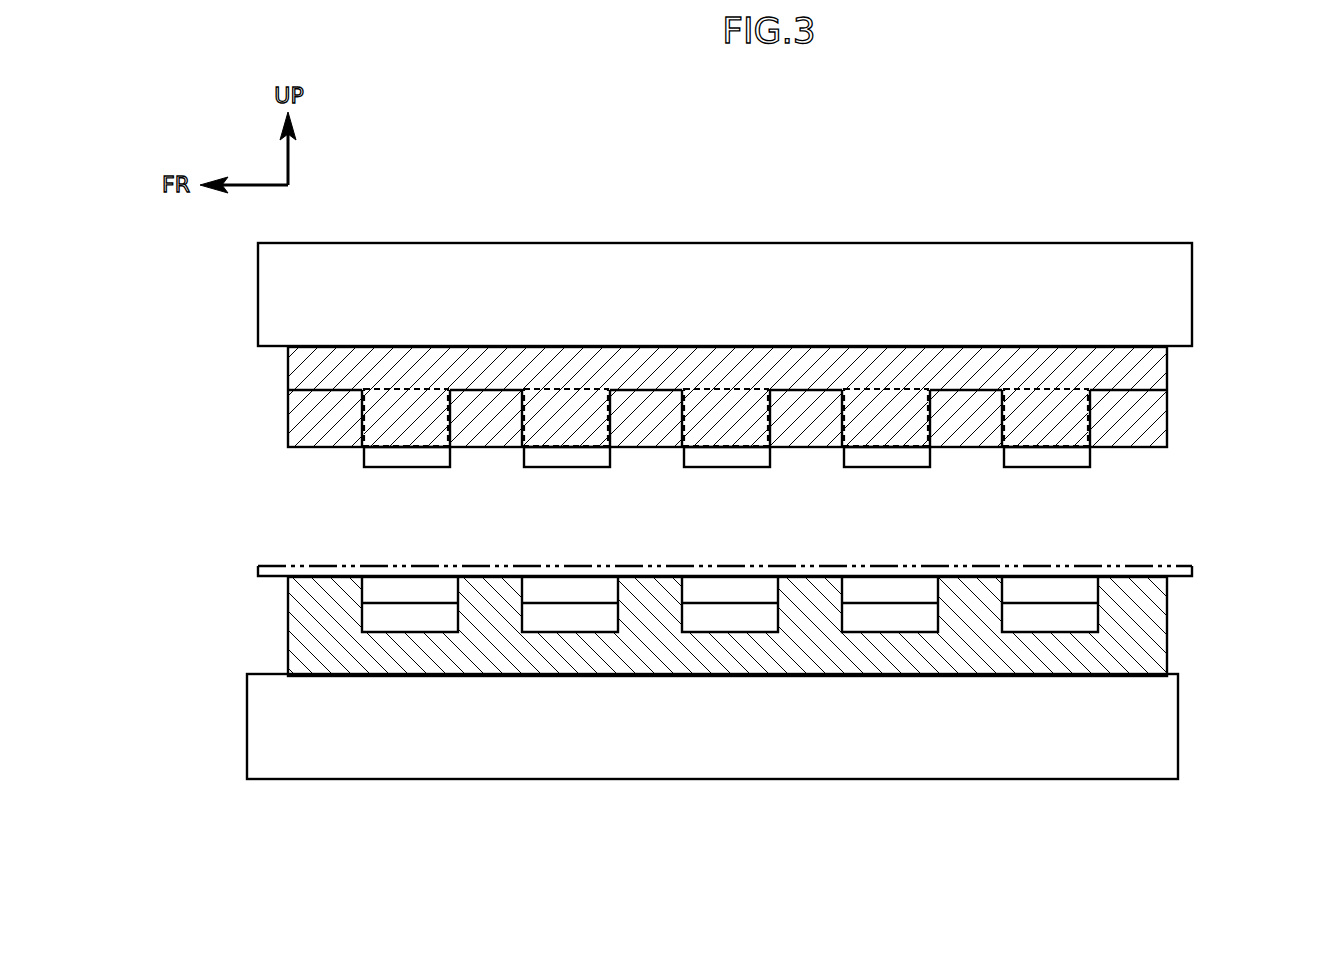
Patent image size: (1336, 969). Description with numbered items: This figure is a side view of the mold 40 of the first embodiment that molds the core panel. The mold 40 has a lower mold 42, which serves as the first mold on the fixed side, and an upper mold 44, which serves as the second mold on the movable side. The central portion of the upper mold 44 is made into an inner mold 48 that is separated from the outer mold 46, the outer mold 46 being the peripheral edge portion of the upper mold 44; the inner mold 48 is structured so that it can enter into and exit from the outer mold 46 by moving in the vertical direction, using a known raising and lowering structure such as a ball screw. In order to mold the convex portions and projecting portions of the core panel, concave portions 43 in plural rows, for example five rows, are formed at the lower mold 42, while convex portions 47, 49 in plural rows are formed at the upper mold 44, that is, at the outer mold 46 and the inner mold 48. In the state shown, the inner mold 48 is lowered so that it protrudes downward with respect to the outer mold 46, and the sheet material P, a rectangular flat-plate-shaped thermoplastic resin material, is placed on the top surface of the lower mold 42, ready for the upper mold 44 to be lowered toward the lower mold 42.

The mold 40 is at (901, 195).
The lower mold 42 is at (967, 782).
The concave portions 43 is at (395, 632).
The upper mold 44 is at (621, 242).
The outer mold 46 is at (1170, 361).
The convex portions 47 is at (360, 415).
The inner mold 48 is at (1082, 471).
The convex portions 49 is at (412, 458).
The sheet material P is at (1180, 566).